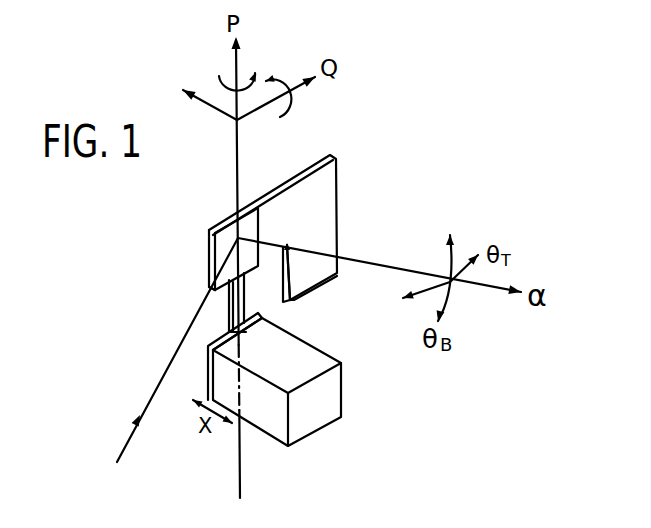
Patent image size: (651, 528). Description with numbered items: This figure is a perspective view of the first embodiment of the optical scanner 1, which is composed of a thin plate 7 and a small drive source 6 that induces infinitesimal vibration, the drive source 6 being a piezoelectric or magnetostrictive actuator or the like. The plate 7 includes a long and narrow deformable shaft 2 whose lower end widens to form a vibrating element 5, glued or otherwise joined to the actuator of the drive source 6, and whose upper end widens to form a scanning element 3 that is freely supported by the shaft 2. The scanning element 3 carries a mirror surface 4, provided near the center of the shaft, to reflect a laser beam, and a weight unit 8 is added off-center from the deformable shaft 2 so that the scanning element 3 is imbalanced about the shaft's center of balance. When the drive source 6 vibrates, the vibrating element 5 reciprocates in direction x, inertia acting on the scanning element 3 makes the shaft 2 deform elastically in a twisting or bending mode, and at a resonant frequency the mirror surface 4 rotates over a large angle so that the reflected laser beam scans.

The optical scanner 1 is at (176, 322).
The deformable shaft 2 is at (245, 297).
The scanning element 3 is at (331, 192).
The mirror surface 4 is at (218, 231).
The vibrating element 5 is at (209, 377).
The drive source 6 is at (333, 388).
The thin plate 7 is at (211, 273).
The weight unit 8 is at (322, 280).